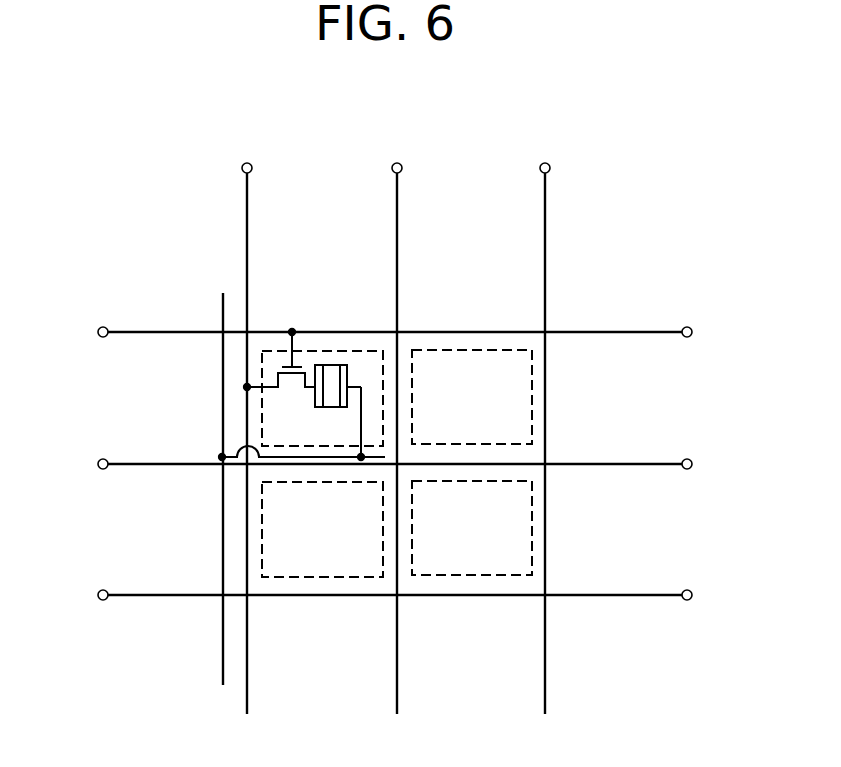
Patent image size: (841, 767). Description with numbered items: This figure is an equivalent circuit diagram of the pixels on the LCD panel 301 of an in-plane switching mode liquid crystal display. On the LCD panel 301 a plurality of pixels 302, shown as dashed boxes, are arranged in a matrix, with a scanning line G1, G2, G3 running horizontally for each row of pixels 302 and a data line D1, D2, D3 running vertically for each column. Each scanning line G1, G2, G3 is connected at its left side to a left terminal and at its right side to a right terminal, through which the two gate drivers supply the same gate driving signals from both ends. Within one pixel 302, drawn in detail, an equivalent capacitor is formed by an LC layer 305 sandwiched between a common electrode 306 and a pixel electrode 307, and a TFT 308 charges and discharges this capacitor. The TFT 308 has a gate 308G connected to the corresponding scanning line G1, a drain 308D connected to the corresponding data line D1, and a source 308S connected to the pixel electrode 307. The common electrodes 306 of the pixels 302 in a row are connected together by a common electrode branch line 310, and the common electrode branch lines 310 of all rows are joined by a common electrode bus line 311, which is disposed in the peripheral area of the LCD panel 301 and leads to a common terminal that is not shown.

The LCD panel 301 is at (702, 100).
The pixel 302 is at (388, 360).
The LC layer 305 is at (332, 407).
The common electrode 306 is at (342, 407).
The pixel electrode 307 is at (320, 407).
The TFT 308 is at (291, 385).
The gate 308G is at (290, 352).
The source 308S is at (308, 387).
The drain 308D is at (278, 388).
The common electrode branch line 310 is at (277, 458).
The common electrode bus line 311 is at (222, 560).
The data line D1 is at (247, 228).
The data line D2 is at (397, 227).
The data line D3 is at (545, 227).
The scanning line G1 is at (170, 332).
The scanning line G2 is at (145, 466).
The scanning line G3 is at (175, 596).